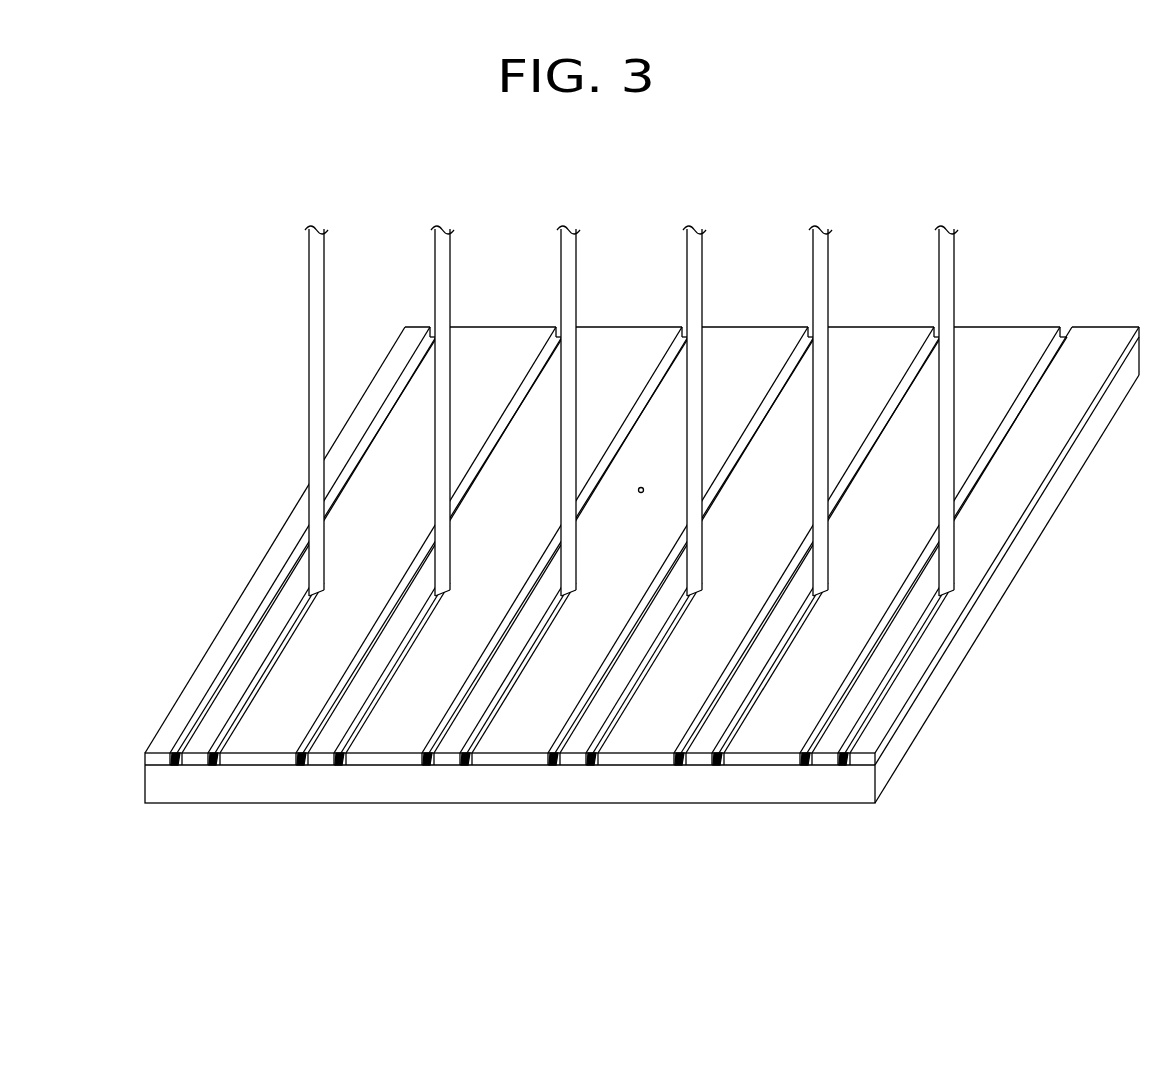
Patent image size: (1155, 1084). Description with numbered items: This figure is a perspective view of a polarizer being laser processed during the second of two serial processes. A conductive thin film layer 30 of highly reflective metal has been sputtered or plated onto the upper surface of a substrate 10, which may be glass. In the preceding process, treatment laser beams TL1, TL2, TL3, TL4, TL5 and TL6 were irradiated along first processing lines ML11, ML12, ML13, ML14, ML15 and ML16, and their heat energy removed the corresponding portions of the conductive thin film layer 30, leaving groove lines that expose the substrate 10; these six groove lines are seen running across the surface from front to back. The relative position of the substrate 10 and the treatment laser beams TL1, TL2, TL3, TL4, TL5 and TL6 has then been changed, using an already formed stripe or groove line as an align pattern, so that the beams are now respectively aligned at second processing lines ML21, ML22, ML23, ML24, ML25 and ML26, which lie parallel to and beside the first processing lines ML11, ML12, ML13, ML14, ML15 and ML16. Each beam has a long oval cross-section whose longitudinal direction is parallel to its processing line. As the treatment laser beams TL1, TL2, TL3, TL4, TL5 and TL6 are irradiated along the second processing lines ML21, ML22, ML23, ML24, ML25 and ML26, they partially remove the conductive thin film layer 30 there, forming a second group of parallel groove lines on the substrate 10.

The substrate 10 is at (937, 690).
The conductive thin film layer 30 is at (890, 737).
The first processing line ML11 is at (175, 765).
The first processing line ML12 is at (301, 765).
The first processing line ML13 is at (427, 765).
The first processing line ML14 is at (553, 765).
The first processing line ML15 is at (679, 765).
The first processing line ML16 is at (805, 765).
The second processing line ML21 is at (213, 765).
The second processing line ML22 is at (339, 765).
The second processing line ML23 is at (465, 765).
The second processing line ML24 is at (591, 765).
The second processing line ML25 is at (717, 765).
The second processing line ML26 is at (843, 765).
The treatment laser beam TL1 is at (308, 258).
The treatment laser beam TL2 is at (434, 258).
The treatment laser beam TL3 is at (560, 258).
The treatment laser beam TL4 is at (686, 258).
The treatment laser beam TL5 is at (812, 258).
The treatment laser beam TL6 is at (938, 258).